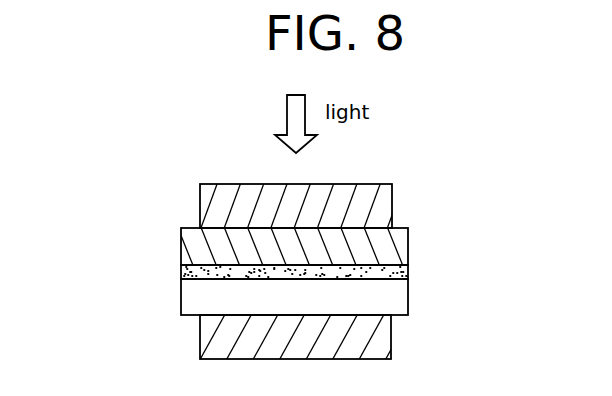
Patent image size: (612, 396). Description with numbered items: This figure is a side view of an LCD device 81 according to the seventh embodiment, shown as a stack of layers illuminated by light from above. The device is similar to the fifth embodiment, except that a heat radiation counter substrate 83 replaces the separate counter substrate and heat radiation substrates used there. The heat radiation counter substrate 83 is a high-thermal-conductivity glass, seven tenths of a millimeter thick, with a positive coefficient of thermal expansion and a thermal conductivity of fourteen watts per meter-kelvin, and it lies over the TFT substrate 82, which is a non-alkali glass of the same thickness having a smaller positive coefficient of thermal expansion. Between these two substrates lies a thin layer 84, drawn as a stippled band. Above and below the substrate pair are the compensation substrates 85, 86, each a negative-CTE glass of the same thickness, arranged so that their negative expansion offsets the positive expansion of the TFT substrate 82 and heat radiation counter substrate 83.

The LCD device 81 is at (160, 244).
The TFT substrate 82 is at (408, 295).
The heat radiation counter substrate 83 is at (408, 245).
The electrode layer 84 is at (408, 272).
The compensation substrate 85 is at (391, 333).
The compensation substrate 86 is at (392, 207).